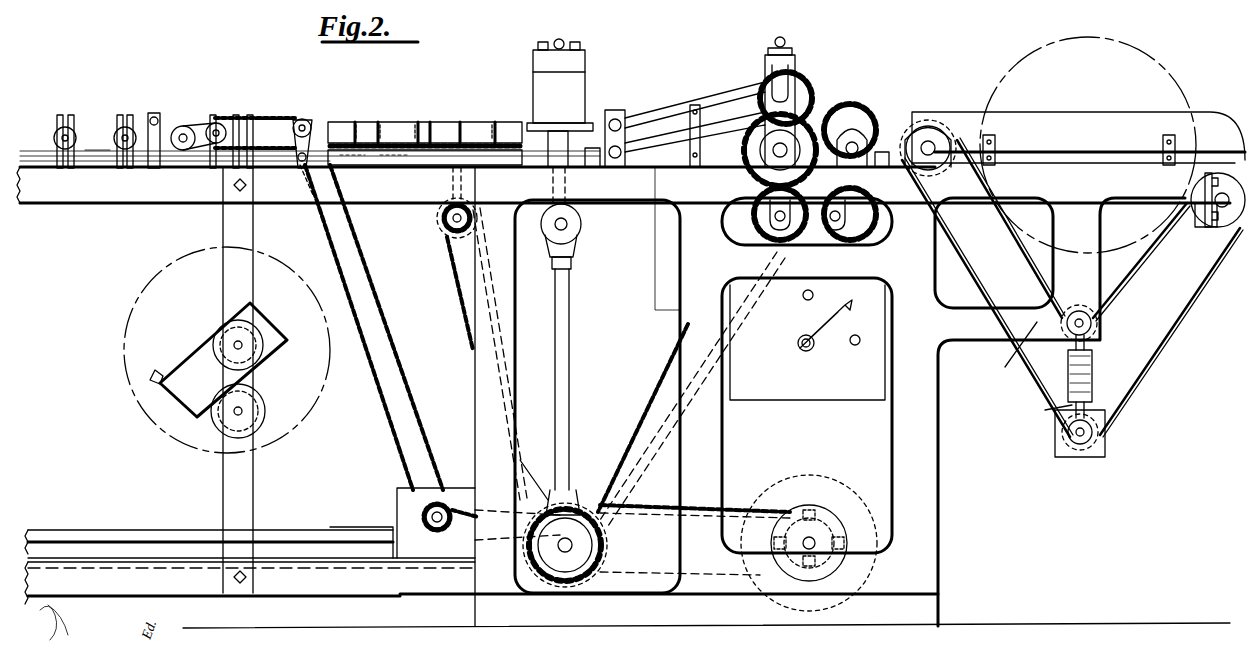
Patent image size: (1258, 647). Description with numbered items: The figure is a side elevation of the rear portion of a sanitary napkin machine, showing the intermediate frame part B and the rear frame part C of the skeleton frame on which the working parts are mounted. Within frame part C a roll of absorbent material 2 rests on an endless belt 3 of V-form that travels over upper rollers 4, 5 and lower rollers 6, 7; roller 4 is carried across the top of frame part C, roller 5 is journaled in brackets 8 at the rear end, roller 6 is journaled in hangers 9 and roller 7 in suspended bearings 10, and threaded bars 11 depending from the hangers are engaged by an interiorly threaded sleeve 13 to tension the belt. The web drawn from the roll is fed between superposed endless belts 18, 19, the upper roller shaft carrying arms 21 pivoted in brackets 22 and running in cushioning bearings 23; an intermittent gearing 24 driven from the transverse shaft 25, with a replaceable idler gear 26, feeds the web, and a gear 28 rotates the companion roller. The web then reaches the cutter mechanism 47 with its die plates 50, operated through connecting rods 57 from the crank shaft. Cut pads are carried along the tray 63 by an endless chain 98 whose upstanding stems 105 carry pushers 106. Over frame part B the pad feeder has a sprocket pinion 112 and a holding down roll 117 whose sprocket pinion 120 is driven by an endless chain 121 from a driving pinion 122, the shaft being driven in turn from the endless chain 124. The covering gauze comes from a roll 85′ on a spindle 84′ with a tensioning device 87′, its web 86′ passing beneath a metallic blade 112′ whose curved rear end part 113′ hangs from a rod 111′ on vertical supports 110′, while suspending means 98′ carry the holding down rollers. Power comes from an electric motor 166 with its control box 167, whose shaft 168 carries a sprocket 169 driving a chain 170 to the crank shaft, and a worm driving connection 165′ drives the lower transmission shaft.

The intermediate frame part B is at (82, 206).
The rear frame part C is at (941, 456).
The suspending means 98′ is at (60, 126).
The metallic blade 112′ is at (97, 150).
The upstanding curved reduced rear end part 113′ is at (140, 128).
The transversely extending rod 111′ is at (152, 116).
The vertical supports 110′ is at (154, 150).
The sprocket pinion 120 is at (180, 127).
The holding down roll 117 is at (193, 128).
The sprocket pinion 112 is at (213, 123).
The endless chain 121 is at (265, 115).
The driving pinion 122 is at (305, 118).
The endless chain 124 is at (448, 330).
The tray 63 is at (367, 132).
The pusher 106 is at (378, 130).
The upstanding stems 105 is at (385, 135).
The endless chain 98 is at (378, 152).
The cutter mechanism 47 is at (585, 65).
The die plates 50 is at (590, 145).
The brackets 22 is at (620, 110).
The endless belt 18 is at (677, 100).
The endless belt 19 is at (718, 130).
The cushioning bearings 23 is at (780, 72).
The gear 28 is at (805, 93).
The idler gear 26 is at (858, 128).
The shaft 25 is at (775, 219).
The intermittent gearing 24 is at (855, 232).
The upper roller 4 is at (932, 130).
The arms 21 is at (1160, 105).
The rolls of absorbent material 2 is at (1150, 240).
The endless belt 3 is at (1175, 325).
The upper roller 5 is at (1232, 235).
The brackets 8 is at (1228, 190).
The lower roller 6 is at (1080, 305).
The threaded bars 11 is at (1090, 345).
The interiorly threaded sleeve 13 is at (1093, 372).
The hangers 9 is at (1035, 372).
The lower roller 7 is at (1098, 425).
The suspended bearings 10 is at (1098, 455).
The roll of gauze 85′ is at (158, 285).
The spindle 84′ is at (258, 330).
The tensioning device 87′ is at (212, 398).
The web of gauze 86′ is at (320, 265).
The connecting rods 57 is at (575, 325).
The chain 170 is at (650, 502).
The control box 167 is at (825, 395).
The electric motor 166 is at (823, 490).
The motor shaft 168 is at (815, 538).
The sprocket 169 is at (788, 525).
The worm driving connection 165′ is at (200, 555).